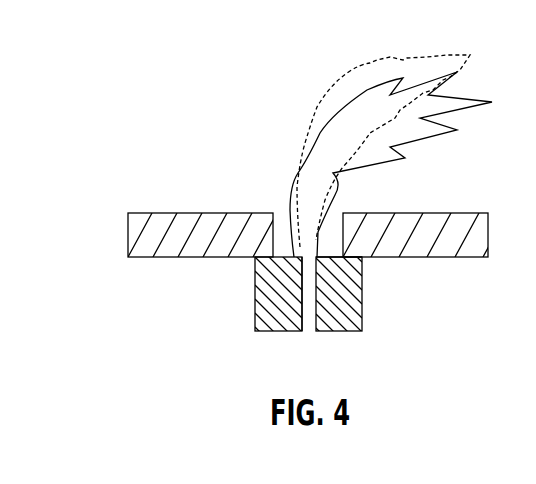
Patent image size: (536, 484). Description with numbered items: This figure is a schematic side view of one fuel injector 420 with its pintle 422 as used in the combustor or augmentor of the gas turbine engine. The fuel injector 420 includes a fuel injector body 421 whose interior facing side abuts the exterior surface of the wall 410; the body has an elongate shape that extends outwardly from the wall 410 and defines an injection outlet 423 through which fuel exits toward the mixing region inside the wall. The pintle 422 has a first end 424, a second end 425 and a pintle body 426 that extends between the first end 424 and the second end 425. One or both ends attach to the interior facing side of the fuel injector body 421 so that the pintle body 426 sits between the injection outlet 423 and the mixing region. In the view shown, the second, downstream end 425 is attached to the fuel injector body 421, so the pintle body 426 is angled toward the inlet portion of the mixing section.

The wall 410 is at (211, 213).
The fuel injector 420 is at (255, 318).
The fuel injector body 421 is at (362, 330).
The pintle 422 is at (296, 190).
The injection outlet 423 is at (308, 263).
The first end 424 is at (320, 257).
The second end 425 is at (340, 262).
The pintle body 426 is at (325, 232).